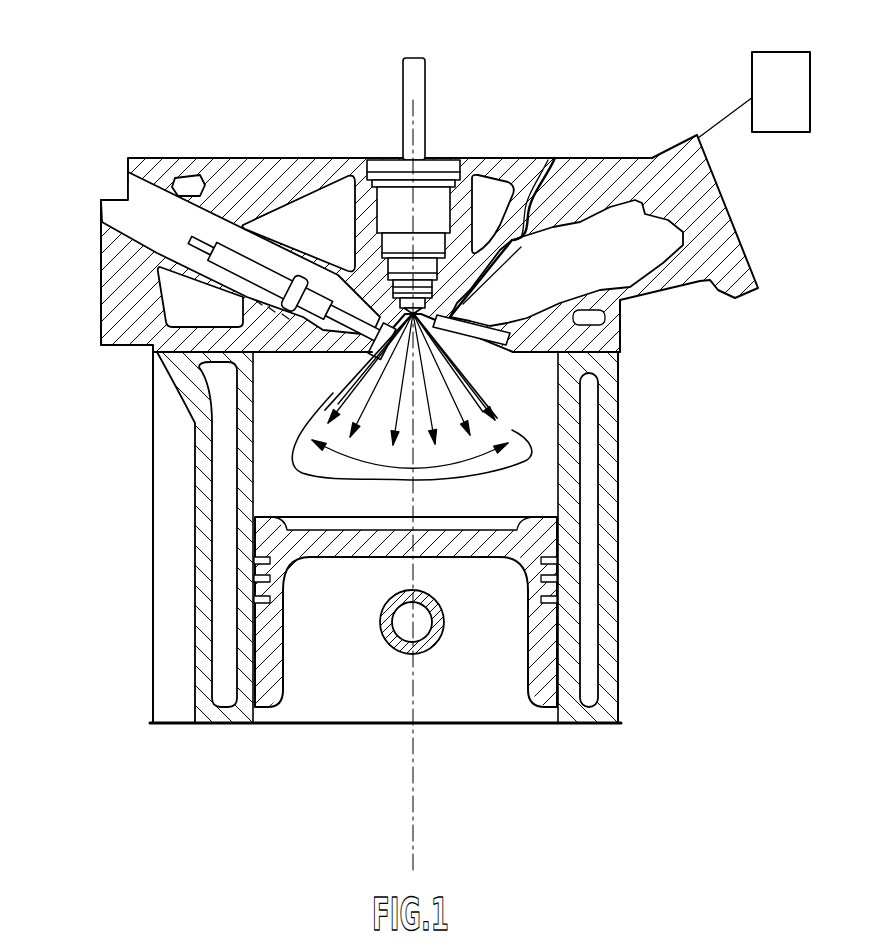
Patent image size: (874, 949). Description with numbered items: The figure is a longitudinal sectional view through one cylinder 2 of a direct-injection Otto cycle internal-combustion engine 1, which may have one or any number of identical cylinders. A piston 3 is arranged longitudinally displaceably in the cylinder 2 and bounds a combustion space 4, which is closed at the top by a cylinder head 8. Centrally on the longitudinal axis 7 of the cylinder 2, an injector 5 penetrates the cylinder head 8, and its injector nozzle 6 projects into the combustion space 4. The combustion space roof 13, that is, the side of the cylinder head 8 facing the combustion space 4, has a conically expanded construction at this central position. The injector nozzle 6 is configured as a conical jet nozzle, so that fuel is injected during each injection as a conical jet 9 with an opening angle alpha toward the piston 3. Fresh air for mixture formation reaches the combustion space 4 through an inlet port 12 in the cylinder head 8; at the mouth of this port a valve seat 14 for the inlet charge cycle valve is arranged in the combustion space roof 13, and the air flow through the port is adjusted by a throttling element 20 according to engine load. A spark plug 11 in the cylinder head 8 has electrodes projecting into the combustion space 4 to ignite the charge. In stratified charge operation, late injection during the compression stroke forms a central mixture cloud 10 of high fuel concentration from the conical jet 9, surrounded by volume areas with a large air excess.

The direct-injection Otto internal-combustion engine 1 is at (399, 367).
The cylinder 2 is at (572, 402).
The piston 3 is at (540, 543).
The combustion space 4 is at (530, 495).
The injector 5 is at (432, 203).
The injector nozzle 6 is at (543, 162).
The longitudinal axis 7 is at (410, 840).
The cylinder head 8 is at (113, 267).
The conical jet 9 is at (468, 380).
The central mixture cloud 10 is at (313, 460).
The spark plug 11 is at (303, 310).
The inlet port 12 is at (507, 318).
The combustion space roof 13 is at (380, 327).
The valve seat 14 is at (470, 307).
The throttling element 20 is at (752, 73).